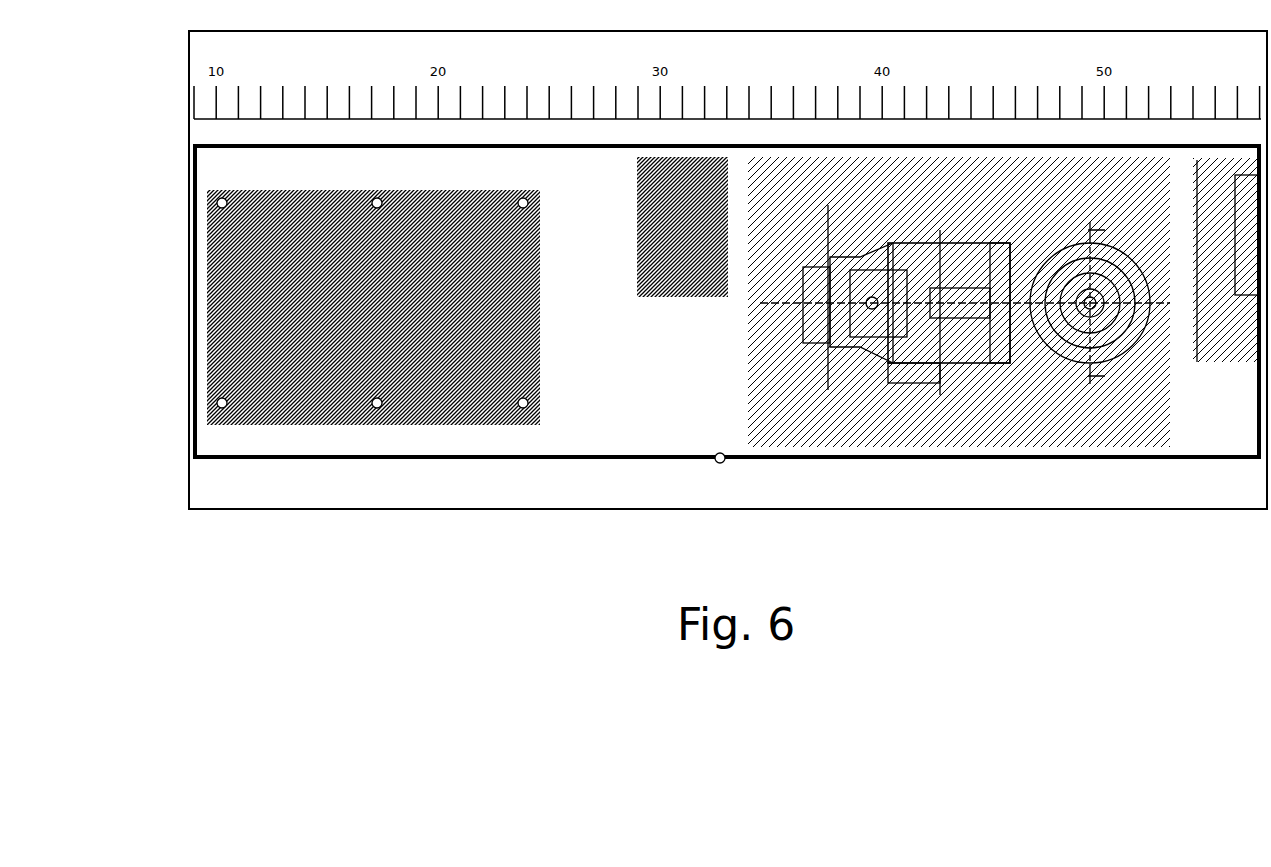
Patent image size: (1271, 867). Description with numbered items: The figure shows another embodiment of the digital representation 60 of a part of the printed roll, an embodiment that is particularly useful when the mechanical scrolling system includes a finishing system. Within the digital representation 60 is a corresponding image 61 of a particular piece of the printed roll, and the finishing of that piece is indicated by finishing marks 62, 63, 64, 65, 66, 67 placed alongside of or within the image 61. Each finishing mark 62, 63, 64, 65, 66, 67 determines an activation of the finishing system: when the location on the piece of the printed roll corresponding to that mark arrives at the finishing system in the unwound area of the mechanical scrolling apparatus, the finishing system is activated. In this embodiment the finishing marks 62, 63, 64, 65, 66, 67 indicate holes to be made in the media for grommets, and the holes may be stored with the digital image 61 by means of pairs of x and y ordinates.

The digital representation 60 is at (1075, 455).
The image 61 is at (460, 413).
The finishing mark 62 is at (217, 413).
The finishing mark 63 is at (383, 407).
The finishing mark 64 is at (530, 403).
The finishing mark 65 is at (530, 203).
The finishing mark 66 is at (379, 198).
The finishing mark 67 is at (217, 220).